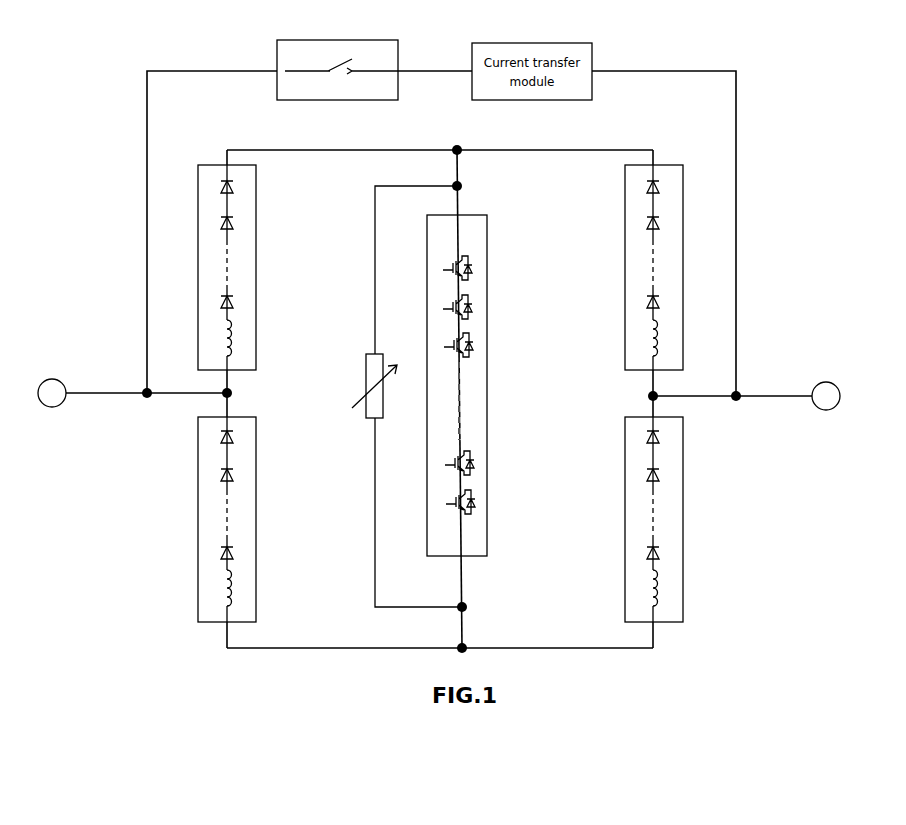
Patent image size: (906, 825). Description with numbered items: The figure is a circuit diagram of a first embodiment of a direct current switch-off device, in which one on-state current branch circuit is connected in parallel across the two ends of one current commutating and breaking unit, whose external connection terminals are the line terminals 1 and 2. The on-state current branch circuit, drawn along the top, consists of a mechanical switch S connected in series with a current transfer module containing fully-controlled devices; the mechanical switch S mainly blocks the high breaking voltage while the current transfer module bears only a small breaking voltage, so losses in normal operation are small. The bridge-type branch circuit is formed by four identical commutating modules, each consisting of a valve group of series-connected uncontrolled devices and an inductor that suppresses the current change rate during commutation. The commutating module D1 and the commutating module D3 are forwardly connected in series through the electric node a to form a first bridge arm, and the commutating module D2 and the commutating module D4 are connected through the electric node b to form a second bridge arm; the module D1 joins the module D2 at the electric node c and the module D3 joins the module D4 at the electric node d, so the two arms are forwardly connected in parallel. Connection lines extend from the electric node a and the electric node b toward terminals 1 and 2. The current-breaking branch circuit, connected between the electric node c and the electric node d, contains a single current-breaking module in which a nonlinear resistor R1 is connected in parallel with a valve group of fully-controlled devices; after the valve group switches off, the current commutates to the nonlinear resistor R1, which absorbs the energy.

The mechanical switch S is at (340, 40).
The commutating module D1 is at (256, 225).
The commutating module D2 is at (683, 225).
The commutating module D3 is at (256, 505).
The commutating module D4 is at (683, 505).
The nonlinear resistor R1 is at (368, 420).
The electric node a is at (233, 393).
The electric node b is at (647, 396).
The electric node c is at (463, 155).
The electric node d is at (467, 645).
The first terminal 1 is at (52, 393).
The second terminal 2 is at (826, 396).